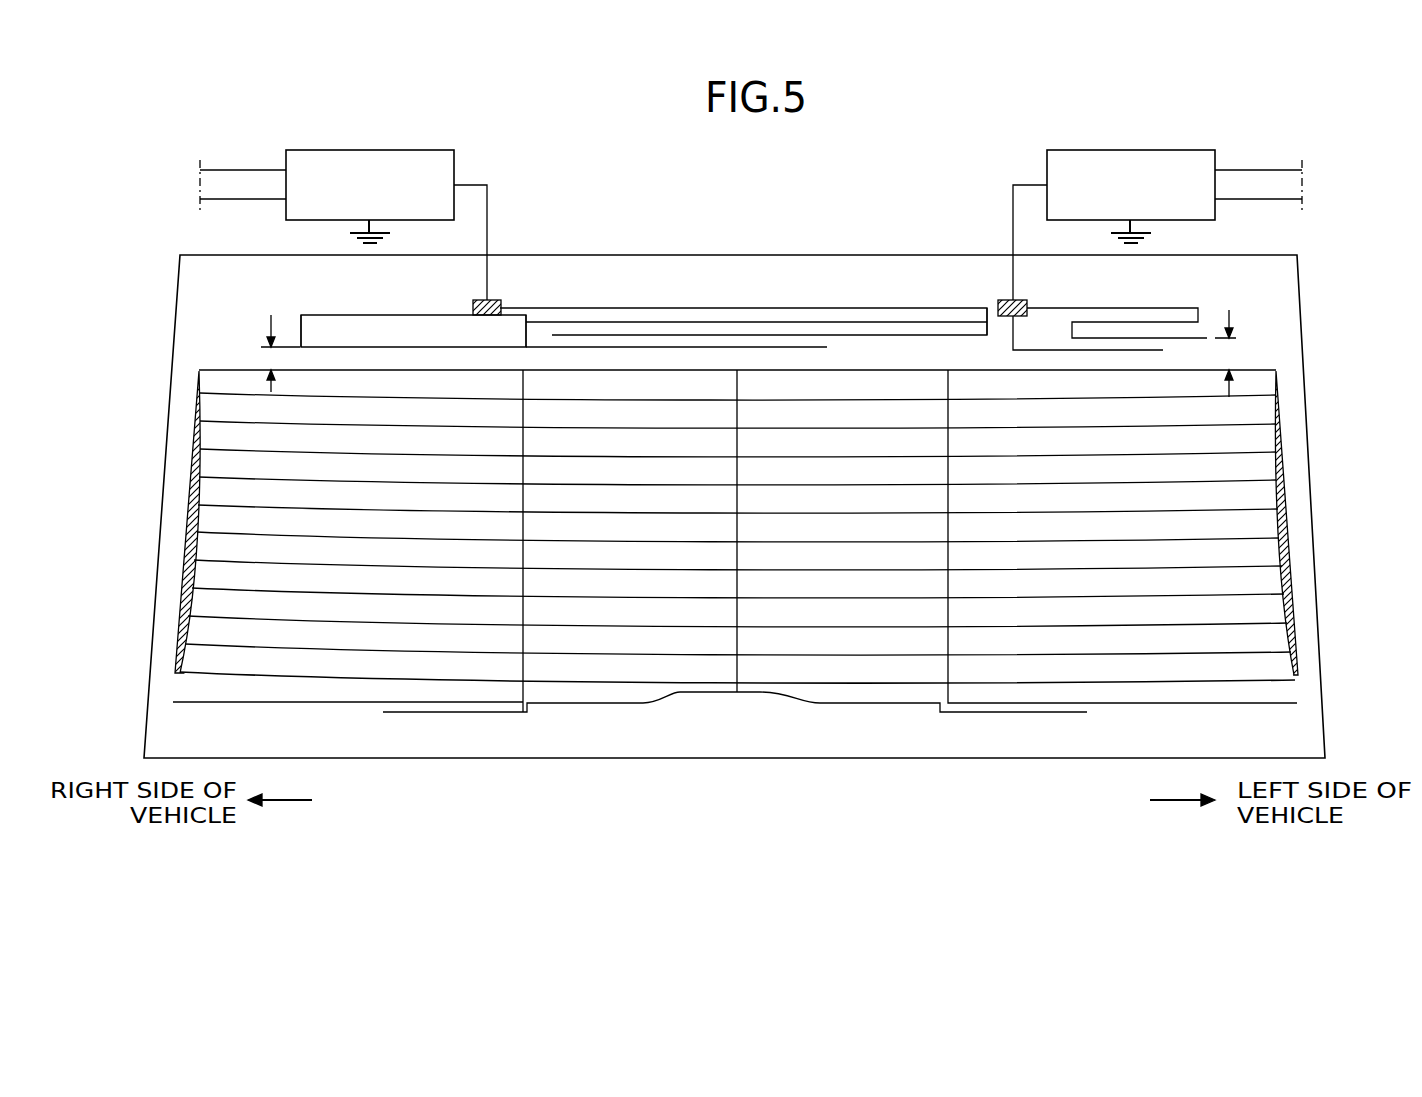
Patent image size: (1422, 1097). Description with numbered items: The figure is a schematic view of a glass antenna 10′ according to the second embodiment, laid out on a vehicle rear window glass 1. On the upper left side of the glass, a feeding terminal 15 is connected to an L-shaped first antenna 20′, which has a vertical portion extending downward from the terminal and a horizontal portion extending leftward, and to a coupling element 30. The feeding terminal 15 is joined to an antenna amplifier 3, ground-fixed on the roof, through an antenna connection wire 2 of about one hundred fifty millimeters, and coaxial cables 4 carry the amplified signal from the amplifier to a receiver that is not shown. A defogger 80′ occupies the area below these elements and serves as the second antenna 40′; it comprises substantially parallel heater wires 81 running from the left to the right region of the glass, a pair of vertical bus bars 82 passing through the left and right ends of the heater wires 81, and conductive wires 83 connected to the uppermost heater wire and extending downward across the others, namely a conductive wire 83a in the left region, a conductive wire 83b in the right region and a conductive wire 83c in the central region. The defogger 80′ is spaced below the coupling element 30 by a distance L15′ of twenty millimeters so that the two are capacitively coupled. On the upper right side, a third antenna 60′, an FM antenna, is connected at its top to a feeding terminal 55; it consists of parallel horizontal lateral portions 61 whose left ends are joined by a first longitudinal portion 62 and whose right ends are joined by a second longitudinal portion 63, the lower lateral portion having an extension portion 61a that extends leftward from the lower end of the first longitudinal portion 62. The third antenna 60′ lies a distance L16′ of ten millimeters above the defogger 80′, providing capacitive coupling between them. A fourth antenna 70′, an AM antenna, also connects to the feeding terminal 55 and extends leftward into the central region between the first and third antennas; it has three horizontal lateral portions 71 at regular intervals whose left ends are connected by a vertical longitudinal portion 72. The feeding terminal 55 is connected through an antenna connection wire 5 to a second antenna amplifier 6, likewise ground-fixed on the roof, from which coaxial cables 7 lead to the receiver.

The rear window glass 1 is at (1300, 336).
The antenna connection wire 2 is at (1012, 204).
The antenna amplifier 3 is at (1098, 150).
The coaxial cables 4 is at (1228, 172).
The antenna connection wire 5 is at (489, 217).
The antenna amplifier 6 is at (435, 150).
The coaxial cables 7 is at (223, 170).
The glass antenna 10′ is at (1140, 311).
The feeding terminal 15 is at (1018, 300).
The first antenna 20′ is at (1008, 342).
The coupling element 30 is at (1222, 298).
The feeding terminal 55 is at (497, 300).
The third antenna 60′ is at (538, 320).
The lateral portions 61 is at (373, 313).
The extension portion 61a is at (797, 348).
The first longitudinal portion 62 is at (528, 330).
The second longitudinal portion 63 is at (297, 298).
The fourth antenna 70′ is at (749, 299).
The lateral portions 71 is at (787, 306).
The longitudinal portion 72 is at (998, 302).
The defogger 80′ is at (746, 511).
The second antenna 40′ is at (729, 511).
The heater wires 81 is at (898, 370).
The bus bars 82 is at (177, 629).
The conductive wires 83 is at (735, 557).
The conductive wire 83a is at (950, 670).
The conductive wire 83b is at (523, 668).
The conductive wire 83c is at (737, 668).
The distance L15′ is at (1249, 353).
The distance L16′ is at (254, 353).